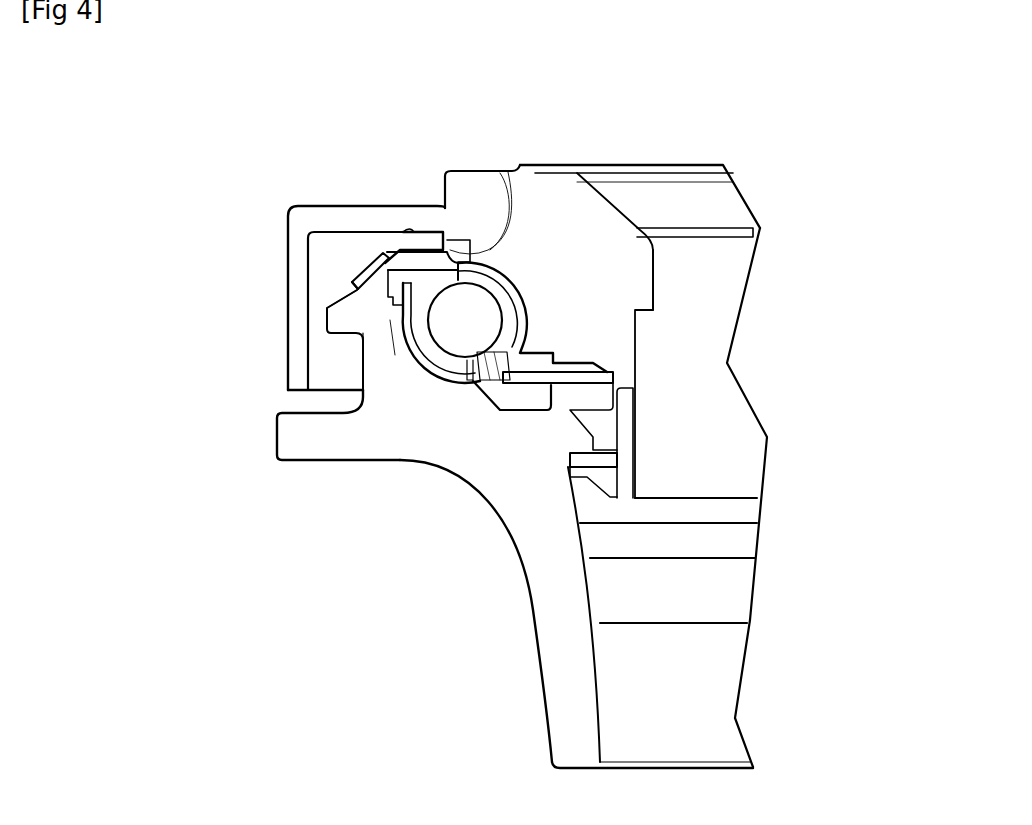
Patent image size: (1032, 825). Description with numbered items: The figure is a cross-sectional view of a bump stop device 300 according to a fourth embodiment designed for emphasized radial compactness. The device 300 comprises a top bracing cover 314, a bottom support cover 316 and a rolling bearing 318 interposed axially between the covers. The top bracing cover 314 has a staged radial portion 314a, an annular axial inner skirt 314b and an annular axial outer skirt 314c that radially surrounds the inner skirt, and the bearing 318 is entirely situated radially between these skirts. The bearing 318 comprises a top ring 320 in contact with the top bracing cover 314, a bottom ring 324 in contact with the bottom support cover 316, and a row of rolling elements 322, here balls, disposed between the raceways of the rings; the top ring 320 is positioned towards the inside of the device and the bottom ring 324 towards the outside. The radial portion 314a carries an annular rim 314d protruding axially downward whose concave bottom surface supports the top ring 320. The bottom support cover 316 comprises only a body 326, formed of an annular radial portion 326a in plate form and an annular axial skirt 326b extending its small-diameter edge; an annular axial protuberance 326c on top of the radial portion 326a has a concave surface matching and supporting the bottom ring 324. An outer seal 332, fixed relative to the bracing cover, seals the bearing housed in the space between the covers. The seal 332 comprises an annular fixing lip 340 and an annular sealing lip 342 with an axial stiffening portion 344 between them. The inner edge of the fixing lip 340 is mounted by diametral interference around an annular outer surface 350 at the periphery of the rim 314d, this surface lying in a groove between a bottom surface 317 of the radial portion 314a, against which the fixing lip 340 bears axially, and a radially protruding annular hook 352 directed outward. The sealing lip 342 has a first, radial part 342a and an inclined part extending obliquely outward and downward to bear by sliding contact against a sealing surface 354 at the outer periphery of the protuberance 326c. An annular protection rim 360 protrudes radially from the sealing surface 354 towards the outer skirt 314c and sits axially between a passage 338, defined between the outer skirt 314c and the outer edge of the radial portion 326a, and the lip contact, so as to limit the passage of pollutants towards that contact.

The bump stop device 300 is at (790, 238).
The top bracing cover 314 is at (663, 286).
The radial portion 314a is at (560, 190).
The annular axial inner skirt 314b is at (623, 418).
The annular axial outer skirt 314c is at (298, 286).
The annular rim 314d is at (517, 272).
The bottom support cover 316 is at (451, 544).
The bottom surface 317 is at (310, 234).
The rolling bearing 318 is at (469, 422).
The top ring 320 is at (520, 358).
The rolling elements 322 is at (455, 343).
The bottom ring 324 is at (388, 328).
The body 326 is at (451, 544).
The annular radial portion 326a is at (273, 452).
The annular axial skirt 326b is at (583, 600).
The annular axial protuberance 326c is at (395, 355).
The outer seal 332 is at (358, 268).
The passage 338 is at (352, 398).
The annular fixing lip 340 is at (440, 233).
The annular sealing lip 342 is at (311, 182).
The radial part 342a is at (372, 246).
The stiffening portion 344 is at (398, 250).
The annular outer surface 350 is at (448, 256).
The annular hook 352 is at (509, 170).
The sealing surface 354 is at (356, 348).
The annular protection rim 360 is at (390, 310).